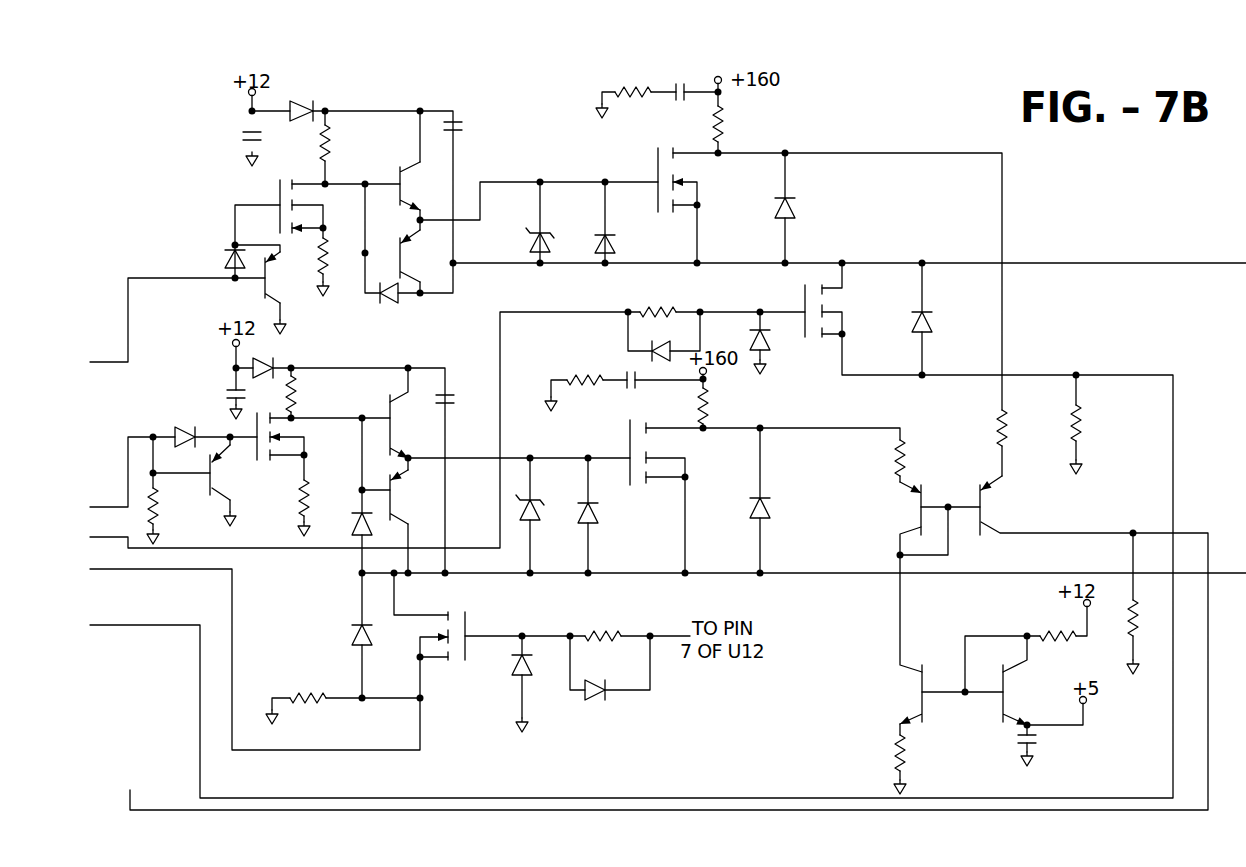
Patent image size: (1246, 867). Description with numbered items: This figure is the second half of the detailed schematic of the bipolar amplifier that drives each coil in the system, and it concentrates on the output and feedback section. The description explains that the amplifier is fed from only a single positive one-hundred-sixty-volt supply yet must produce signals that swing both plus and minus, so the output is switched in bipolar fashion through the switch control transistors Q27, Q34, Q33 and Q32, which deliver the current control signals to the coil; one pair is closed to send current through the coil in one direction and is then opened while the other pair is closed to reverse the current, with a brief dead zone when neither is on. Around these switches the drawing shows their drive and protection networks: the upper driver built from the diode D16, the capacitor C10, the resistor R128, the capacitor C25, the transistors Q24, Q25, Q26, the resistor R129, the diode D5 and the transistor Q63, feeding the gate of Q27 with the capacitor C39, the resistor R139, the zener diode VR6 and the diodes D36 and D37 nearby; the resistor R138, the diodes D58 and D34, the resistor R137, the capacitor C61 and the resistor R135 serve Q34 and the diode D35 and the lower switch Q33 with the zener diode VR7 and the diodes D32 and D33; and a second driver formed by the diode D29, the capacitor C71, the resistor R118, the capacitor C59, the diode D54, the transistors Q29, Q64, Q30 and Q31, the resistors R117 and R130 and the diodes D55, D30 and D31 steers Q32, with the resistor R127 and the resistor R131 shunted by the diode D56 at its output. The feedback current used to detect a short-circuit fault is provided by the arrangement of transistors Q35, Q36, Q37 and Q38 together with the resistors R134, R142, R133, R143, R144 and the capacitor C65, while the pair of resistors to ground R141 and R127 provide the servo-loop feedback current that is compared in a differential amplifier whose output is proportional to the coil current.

The diode D16 is at (304, 100).
The capacitor C10 is at (272, 147).
The resistor R128 is at (349, 144).
The capacitor C25 is at (473, 138).
The transistor Q24 is at (270, 206).
The transistor Q25 is at (423, 186).
The transistor Q26 is at (423, 256).
The resistor R129 is at (347, 263).
The diode D5 is at (219, 264).
The transistor Q63 is at (285, 293).
The capacitor C39 is at (690, 81).
The resistor R139 is at (743, 124).
The switch control transistor Q27 is at (698, 180).
The zener diode VR6 is at (519, 241).
The diode D36 is at (626, 243).
The diode D37 is at (806, 205).
The switch control transistor Q34 is at (843, 311).
The diode D35 is at (943, 320).
The resistor R138 is at (655, 293).
The diode D58 is at (661, 340).
The diode D34 is at (737, 349).
The resistor R137 is at (577, 383).
The capacitor C61 is at (635, 392).
The resistor R135 is at (727, 401).
The switch control transistor Q33 is at (676, 452).
The zener diode VR7 is at (544, 523).
The diode D32 is at (610, 512).
The diode D33 is at (782, 507).
The diode D29 is at (265, 357).
The capacitor C71 is at (216, 393).
The resistor R118 is at (314, 394).
The capacitor C59 is at (464, 399).
The diode D54 is at (182, 426).
The transistor Q29 is at (301, 436).
The transistor Q64 is at (236, 485).
The resistor R117 is at (176, 512).
The resistor R130 is at (284, 508).
The transistor Q30 is at (412, 426).
The transistor Q31 is at (415, 497).
The diode D55 is at (342, 530).
The diode D30 is at (341, 634).
The switch control transistor Q32 is at (422, 636).
The resistor to ground R127 is at (301, 700).
The diode D31 is at (501, 693).
The resistor R131 is at (608, 636).
The diode D56 is at (598, 703).
The resistor R134 is at (872, 460).
The transistor Q35 is at (894, 508).
The transistor Q36 is at (1005, 505).
The resistor R142 is at (978, 429).
The resistor to ground R141 is at (1100, 439).
The transistor Q37 is at (896, 694).
The resistor R133 is at (872, 762).
The transistor Q38 is at (1028, 695).
The capacitor C65 is at (1048, 752).
The resistor R143 is at (1058, 640).
The resistor R144 is at (1137, 632).